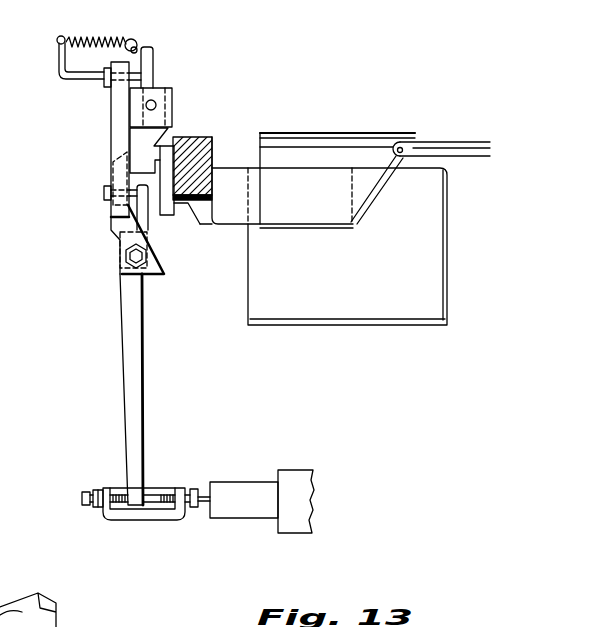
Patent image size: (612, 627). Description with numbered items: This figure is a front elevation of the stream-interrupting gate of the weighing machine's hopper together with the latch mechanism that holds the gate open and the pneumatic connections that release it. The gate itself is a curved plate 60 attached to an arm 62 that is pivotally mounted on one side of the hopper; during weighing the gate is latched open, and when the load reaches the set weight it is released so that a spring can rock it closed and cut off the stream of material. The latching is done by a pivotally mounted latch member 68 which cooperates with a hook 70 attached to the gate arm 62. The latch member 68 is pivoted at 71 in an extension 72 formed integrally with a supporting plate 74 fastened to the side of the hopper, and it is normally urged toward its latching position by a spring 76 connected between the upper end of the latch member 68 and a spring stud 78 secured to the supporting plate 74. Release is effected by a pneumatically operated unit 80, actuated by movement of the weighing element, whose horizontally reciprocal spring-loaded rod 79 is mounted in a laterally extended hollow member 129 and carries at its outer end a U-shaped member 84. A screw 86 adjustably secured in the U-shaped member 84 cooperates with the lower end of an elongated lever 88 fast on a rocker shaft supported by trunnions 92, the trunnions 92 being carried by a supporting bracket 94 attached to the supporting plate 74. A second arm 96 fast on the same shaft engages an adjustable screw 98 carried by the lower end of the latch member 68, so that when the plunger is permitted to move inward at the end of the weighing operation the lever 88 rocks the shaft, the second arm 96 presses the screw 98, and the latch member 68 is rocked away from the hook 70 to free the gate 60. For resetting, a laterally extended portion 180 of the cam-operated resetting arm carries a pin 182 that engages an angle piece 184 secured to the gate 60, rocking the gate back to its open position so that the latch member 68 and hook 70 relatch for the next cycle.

The curved plate 60 is at (363, 326).
The arm 62 is at (208, 143).
The latch member 68 is at (137, 147).
The hook 70 is at (168, 158).
The pivot 71 is at (157, 103).
The extension 72 is at (163, 88).
The supporting plate 74 is at (112, 104).
The spring 76 is at (112, 27).
The spring stud 78 is at (58, 61).
The spring-loaded rod 79 is at (203, 492).
The pneumatically operated unit 80 is at (298, 458).
The U-shaped member 84 is at (162, 522).
The screw 86 is at (120, 490).
The elongated lever 88 is at (137, 383).
The trunnions 92 is at (122, 254).
The supporting bracket 94 is at (158, 262).
The second arm 96 is at (145, 221).
The adjustable screw 98 is at (103, 193).
The hollow member 129 is at (233, 483).
The laterally extended portion 180 is at (428, 140).
The pin 182 is at (399, 148).
The angle piece 184 is at (307, 133).